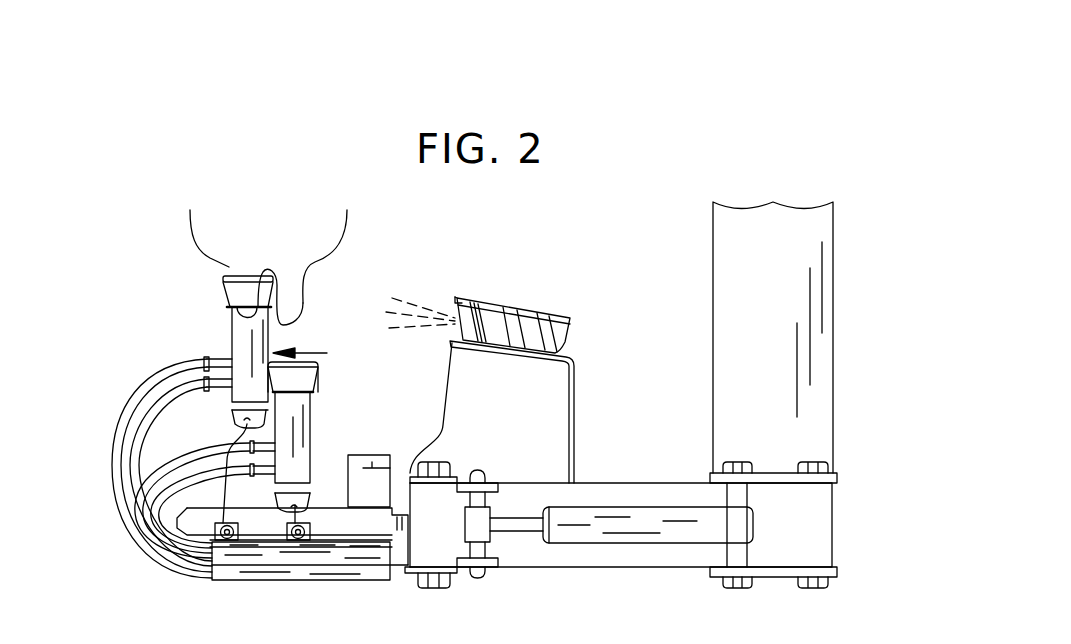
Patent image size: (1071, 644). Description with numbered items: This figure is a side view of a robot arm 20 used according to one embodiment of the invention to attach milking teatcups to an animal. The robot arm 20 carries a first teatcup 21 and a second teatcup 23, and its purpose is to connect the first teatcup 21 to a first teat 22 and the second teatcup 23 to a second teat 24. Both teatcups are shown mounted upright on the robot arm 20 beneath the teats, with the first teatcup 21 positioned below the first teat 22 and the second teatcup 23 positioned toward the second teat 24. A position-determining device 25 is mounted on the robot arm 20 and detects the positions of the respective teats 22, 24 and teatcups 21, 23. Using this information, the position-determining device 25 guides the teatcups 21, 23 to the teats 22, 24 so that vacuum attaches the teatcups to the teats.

The robot arm 20 is at (133, 227).
The first teatcup 21 is at (232, 353).
The first teat 22 is at (229, 267).
The second teatcup 23 is at (313, 468).
The second teat 24 is at (303, 303).
The position-determining device 25 is at (497, 300).